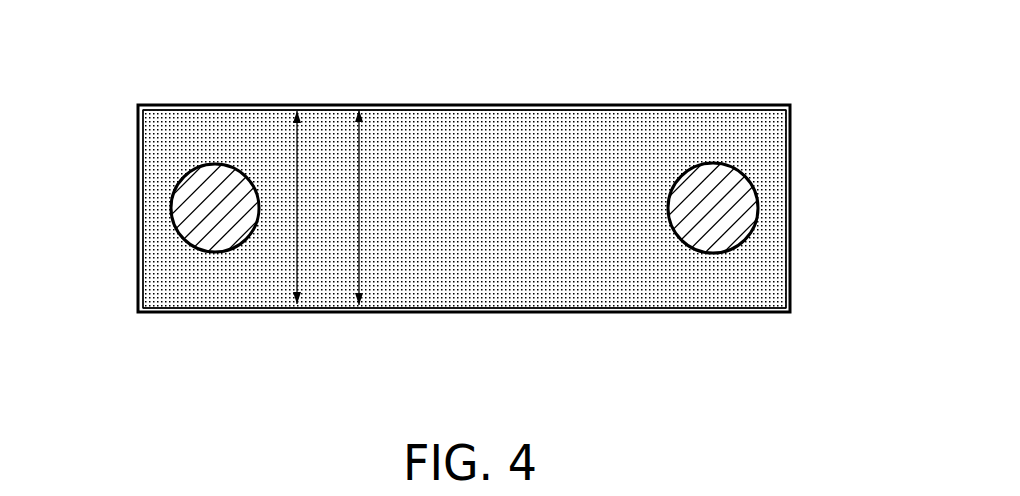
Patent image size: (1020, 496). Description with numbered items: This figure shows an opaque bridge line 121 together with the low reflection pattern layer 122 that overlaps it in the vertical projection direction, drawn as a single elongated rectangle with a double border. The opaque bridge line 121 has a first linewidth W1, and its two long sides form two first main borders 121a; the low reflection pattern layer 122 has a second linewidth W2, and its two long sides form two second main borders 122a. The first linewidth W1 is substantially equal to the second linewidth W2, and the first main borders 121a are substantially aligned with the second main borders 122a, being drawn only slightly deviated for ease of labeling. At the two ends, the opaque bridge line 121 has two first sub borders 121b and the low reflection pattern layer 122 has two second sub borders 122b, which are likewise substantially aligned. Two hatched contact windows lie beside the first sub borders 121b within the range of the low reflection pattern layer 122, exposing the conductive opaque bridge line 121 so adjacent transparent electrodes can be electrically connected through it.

The opaque bridge line 121 is at (497, 106).
The low reflection pattern layer 122 is at (437, 106).
The first main borders 121a is at (652, 104).
The second main borders 122a is at (587, 104).
The first sub borders 121b is at (142, 192).
The second sub borders 122b is at (139, 145).
The first linewidth W1 is at (375, 207).
The second linewidth W2 is at (313, 207).